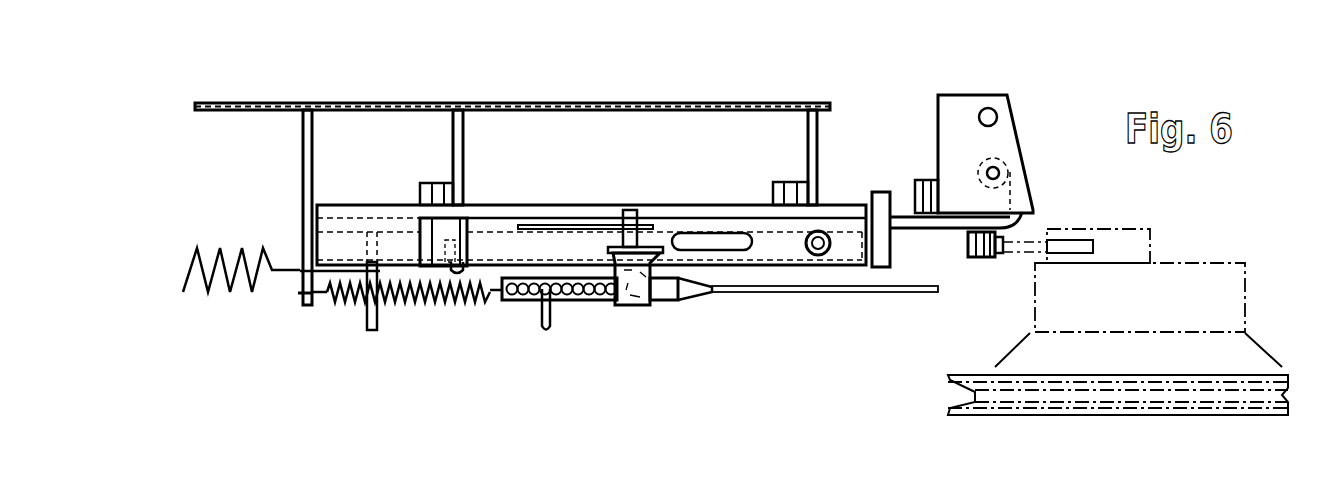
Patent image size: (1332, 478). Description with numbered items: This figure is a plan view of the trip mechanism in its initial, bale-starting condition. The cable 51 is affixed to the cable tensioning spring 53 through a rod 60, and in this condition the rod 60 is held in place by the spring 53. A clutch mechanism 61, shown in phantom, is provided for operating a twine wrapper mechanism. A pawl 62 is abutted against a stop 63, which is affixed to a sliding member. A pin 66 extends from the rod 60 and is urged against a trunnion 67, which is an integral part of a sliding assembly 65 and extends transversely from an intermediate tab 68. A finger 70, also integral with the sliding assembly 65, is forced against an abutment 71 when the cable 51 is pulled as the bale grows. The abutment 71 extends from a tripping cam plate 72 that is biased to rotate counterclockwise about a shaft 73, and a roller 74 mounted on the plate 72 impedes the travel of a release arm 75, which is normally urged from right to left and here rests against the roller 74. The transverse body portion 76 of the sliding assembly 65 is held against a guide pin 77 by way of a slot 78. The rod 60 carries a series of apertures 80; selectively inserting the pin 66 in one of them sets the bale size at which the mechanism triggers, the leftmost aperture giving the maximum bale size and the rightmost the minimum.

The cable 51 is at (850, 293).
The cable tensioning spring 53 is at (421, 304).
The rod 60 is at (512, 301).
The clutch mechanism 61 is at (1246, 305).
The pawl 62 is at (998, 258).
The stop 63 is at (972, 258).
The sliding assembly 65 is at (497, 213).
The pin 66 is at (549, 331).
The trunnion 67 is at (650, 306).
The intermediate tab 68 is at (661, 243).
The finger 70 is at (871, 192).
The abutment 71 is at (913, 190).
The tripping cam plate 72 is at (962, 100).
The shaft 73 is at (998, 117).
The roller 74 is at (1005, 170).
The release arm 75 is at (1022, 203).
The transverse body portion 76 is at (483, 238).
The guide pin 77 is at (804, 243).
The slot 78 is at (696, 243).
The apertures 80 is at (600, 301).